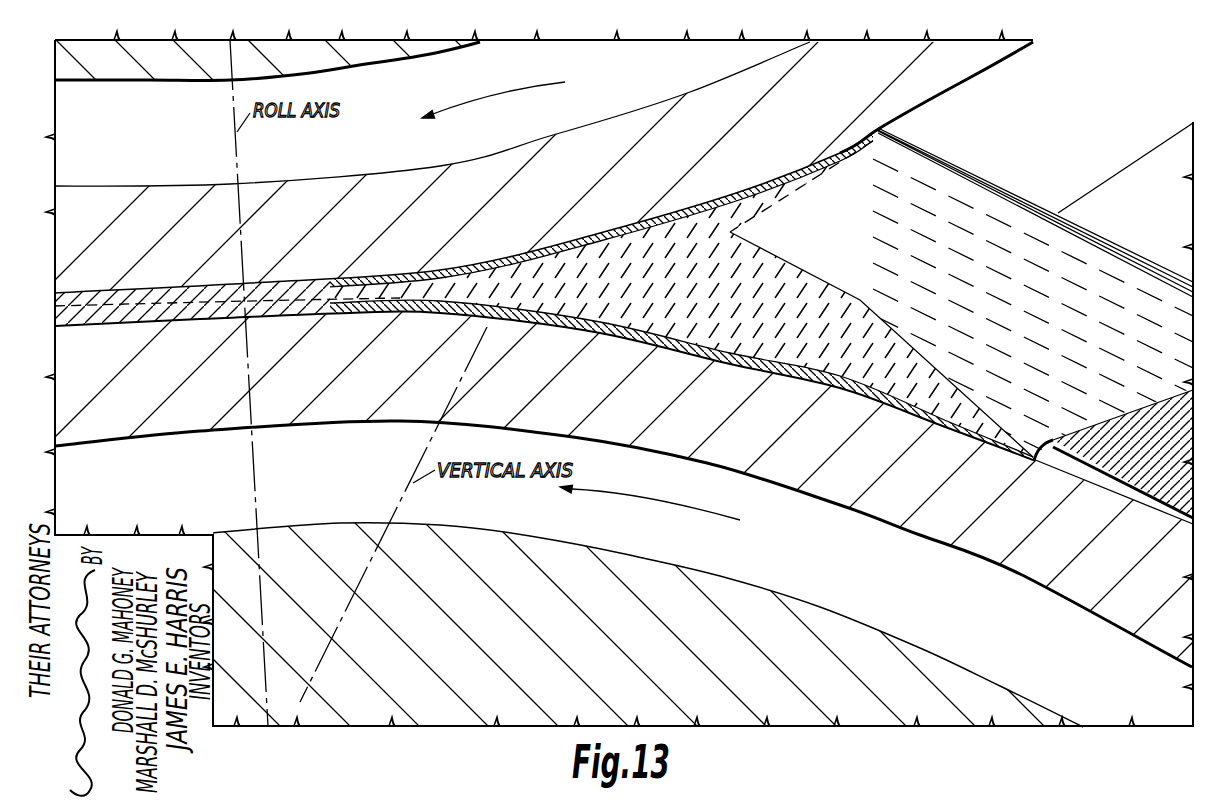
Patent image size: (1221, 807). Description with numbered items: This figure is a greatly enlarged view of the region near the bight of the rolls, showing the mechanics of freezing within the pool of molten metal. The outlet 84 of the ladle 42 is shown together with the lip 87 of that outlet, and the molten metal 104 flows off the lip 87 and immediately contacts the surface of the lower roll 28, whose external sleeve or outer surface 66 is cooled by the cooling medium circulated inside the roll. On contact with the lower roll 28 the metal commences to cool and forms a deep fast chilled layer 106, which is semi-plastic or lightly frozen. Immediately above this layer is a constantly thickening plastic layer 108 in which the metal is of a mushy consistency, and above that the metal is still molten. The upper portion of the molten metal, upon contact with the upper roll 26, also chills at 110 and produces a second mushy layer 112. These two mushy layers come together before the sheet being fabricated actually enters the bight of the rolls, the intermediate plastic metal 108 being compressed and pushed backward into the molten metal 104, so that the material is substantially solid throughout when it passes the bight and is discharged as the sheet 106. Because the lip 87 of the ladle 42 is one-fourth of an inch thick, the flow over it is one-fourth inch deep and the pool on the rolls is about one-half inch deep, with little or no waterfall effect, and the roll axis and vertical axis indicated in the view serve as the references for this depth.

The upper roll 26 is at (1013, 93).
The lower roll 28 is at (1027, 727).
The ladle 42 is at (1188, 130).
The external sleeve 66 is at (937, 92).
The outlet 84 is at (1093, 190).
The lip 87 is at (1050, 468).
The molten metal 104 is at (998, 172).
The deep fast chilled layer 106 is at (58, 300).
The plastic layer 108 is at (807, 355).
The chill 110 is at (743, 188).
The second mushy layer 112 is at (790, 182).